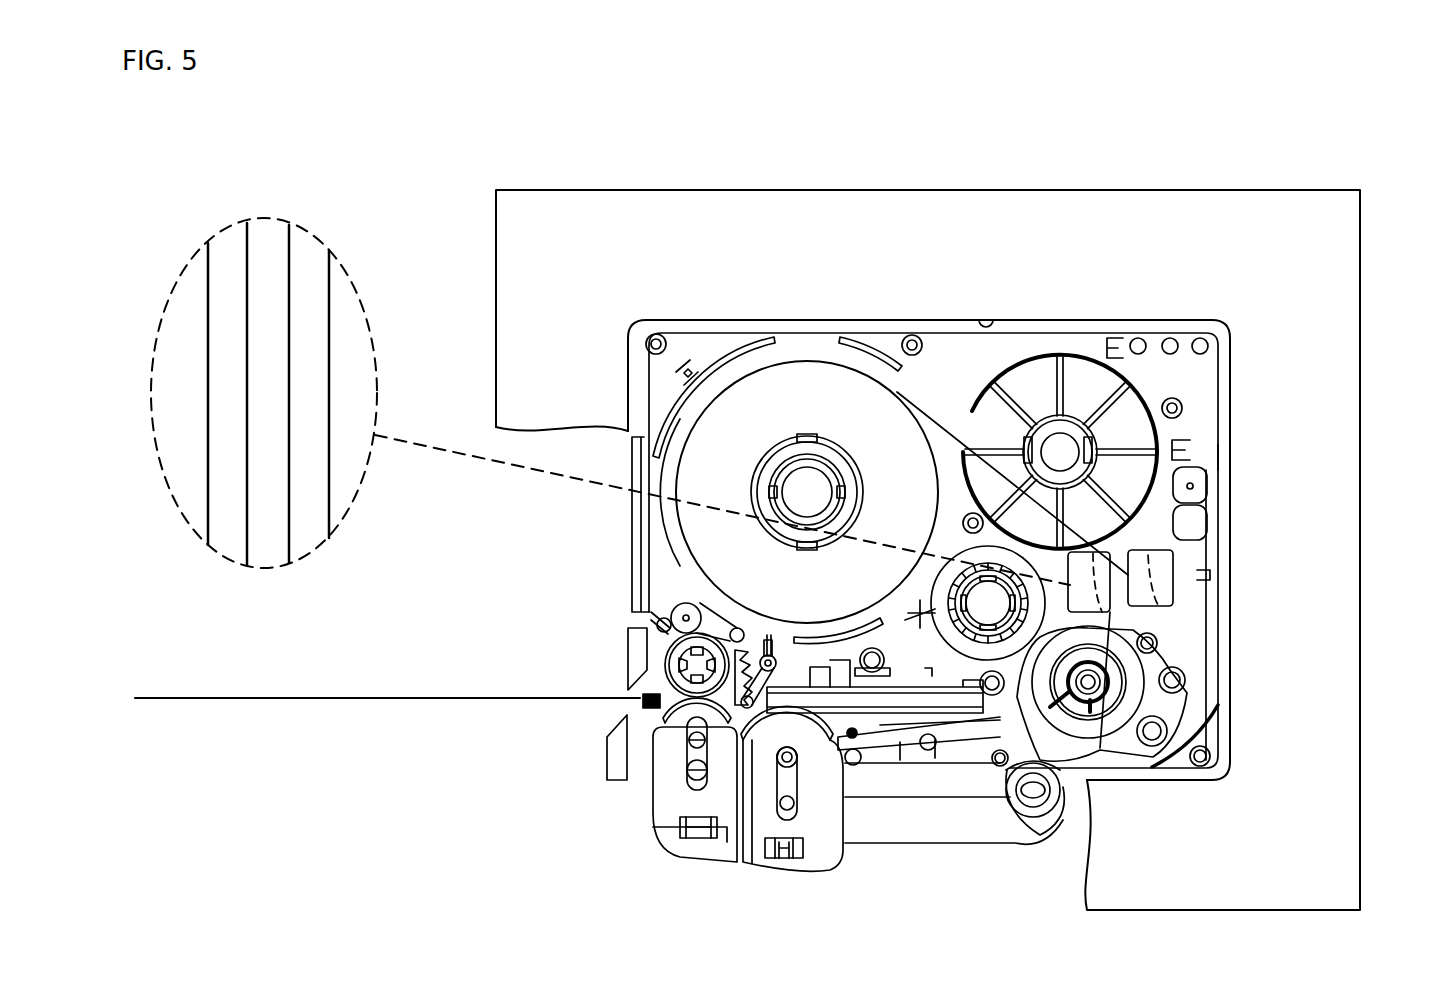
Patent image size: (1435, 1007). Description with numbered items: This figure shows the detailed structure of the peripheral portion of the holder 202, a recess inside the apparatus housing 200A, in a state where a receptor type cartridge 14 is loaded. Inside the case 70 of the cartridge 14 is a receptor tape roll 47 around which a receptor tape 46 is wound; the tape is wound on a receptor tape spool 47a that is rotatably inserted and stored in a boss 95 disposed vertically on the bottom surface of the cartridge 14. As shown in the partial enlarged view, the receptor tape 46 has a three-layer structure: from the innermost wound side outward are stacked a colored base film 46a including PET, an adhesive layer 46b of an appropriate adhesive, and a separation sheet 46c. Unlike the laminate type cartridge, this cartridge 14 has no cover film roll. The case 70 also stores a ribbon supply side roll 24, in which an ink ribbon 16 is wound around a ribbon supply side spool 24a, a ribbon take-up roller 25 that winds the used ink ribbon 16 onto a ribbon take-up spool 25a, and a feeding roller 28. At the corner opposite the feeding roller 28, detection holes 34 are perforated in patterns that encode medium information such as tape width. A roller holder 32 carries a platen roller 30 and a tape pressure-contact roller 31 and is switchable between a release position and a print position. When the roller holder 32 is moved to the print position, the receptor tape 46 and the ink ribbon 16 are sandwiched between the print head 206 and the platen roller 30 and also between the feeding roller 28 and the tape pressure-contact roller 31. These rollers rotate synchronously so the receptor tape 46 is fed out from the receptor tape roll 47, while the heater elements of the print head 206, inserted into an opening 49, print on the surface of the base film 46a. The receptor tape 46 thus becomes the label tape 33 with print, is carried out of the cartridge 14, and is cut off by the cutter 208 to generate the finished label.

The apparatus housing 200A is at (483, 257).
The cartridge 14 is at (818, 322).
The holder 202 is at (980, 318).
The detection holes 34 is at (1214, 310).
The case 70 is at (1222, 456).
The boss 95 is at (655, 443).
The receptor tape roll 47 is at (770, 437).
The receptor tape spool 47a is at (760, 522).
The receptor tape 46 is at (652, 479).
The colored base film 46a is at (228, 263).
The adhesive layer 46b is at (263, 255).
The separation sheet 46c is at (315, 263).
The ribbon take-up roller 25 is at (1037, 613).
The ribbon take-up spool 25a is at (972, 512).
The ribbon supply side roll 24 is at (1110, 678).
The ribbon supply side spool 24a is at (1097, 647).
The feeding roller 28 is at (672, 652).
The label tape with print 33 is at (252, 696).
The cutter 208 is at (612, 788).
The tape pressure-contact roller 31 is at (658, 713).
The platen roller 30 is at (782, 723).
The print head 206 is at (800, 697).
The opening 49 is at (990, 690).
The roller holder 32 is at (903, 813).
The ink ribbon 16 is at (1015, 700).